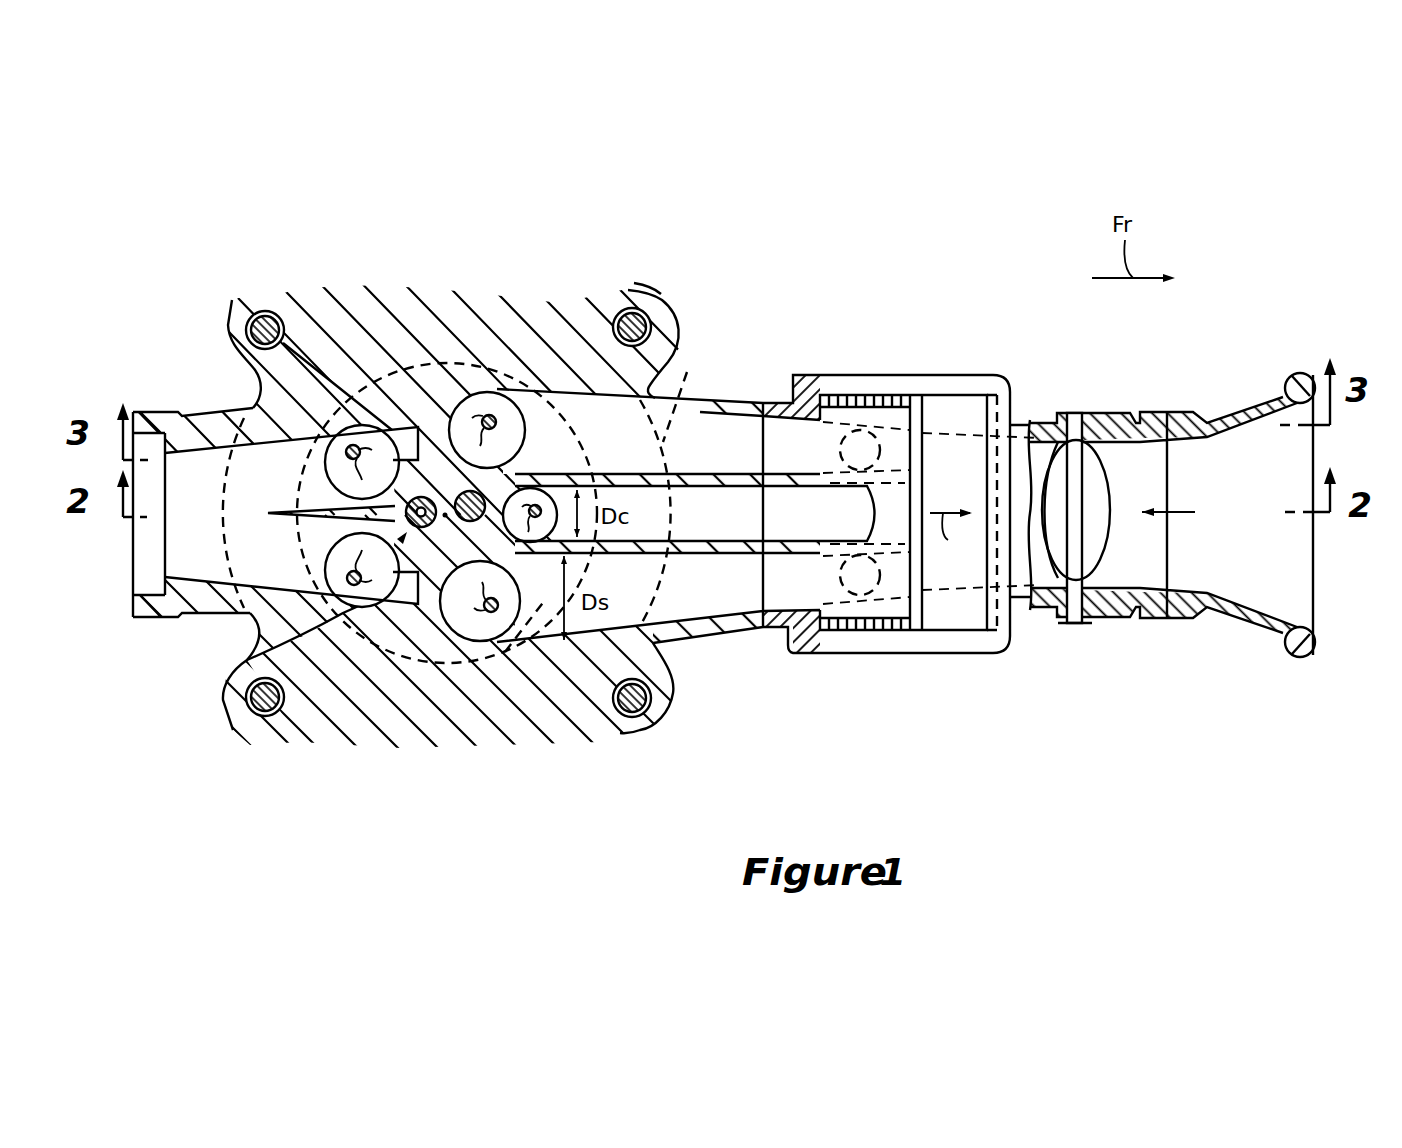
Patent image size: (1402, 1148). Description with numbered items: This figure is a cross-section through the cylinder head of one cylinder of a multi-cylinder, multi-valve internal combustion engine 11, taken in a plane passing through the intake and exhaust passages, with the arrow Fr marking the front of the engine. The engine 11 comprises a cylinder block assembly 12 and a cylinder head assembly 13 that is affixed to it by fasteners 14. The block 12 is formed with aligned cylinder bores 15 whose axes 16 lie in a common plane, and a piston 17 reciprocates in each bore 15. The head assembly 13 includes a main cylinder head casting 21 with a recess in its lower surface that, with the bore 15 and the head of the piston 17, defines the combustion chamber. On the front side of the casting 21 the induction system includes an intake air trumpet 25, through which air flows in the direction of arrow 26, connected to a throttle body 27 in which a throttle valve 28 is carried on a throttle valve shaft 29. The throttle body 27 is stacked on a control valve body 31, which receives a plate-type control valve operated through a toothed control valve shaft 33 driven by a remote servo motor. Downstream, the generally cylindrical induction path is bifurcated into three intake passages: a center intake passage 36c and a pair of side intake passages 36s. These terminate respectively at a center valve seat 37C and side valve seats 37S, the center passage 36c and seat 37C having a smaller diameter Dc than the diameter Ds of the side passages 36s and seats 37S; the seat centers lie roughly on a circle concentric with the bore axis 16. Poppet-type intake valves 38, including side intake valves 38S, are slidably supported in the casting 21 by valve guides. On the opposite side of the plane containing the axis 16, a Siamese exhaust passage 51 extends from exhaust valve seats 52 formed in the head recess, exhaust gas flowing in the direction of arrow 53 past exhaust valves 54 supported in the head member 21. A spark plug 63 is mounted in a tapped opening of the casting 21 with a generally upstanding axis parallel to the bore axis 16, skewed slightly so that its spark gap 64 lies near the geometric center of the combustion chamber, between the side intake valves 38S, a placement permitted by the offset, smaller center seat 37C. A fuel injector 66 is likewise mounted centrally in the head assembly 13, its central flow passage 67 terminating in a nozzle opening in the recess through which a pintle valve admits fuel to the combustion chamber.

The engine 11 is at (782, 231).
The cylinder block assembly 12 is at (700, 398).
The cylinder head assembly 13 is at (680, 333).
The fasteners 14 is at (648, 312).
The cylinder bore 15 is at (248, 430).
The cylinder bore axis 16 is at (445, 515).
The piston 17 is at (483, 392).
The main cylinder head casting 21 is at (523, 303).
The intake air trumpet 25 is at (1247, 633).
The direction of airflow 26 is at (1180, 512).
The throttle body 27 is at (1127, 607).
The throttle valve 28 is at (1087, 480).
The throttle valve shaft 29 is at (1078, 413).
The control valve body 31 is at (818, 376).
The control valve shaft 33 is at (855, 637).
The side intake passages 36s is at (736, 456).
The center intake passage 36c is at (744, 522).
The side valve seats 37S is at (500, 397).
The center valve seat 37C is at (523, 545).
The intake valves 38 is at (553, 468).
The side intake valves 38S is at (505, 652).
The Siamese exhaust passage 51 is at (250, 489).
The exhaust valve seats 52 is at (250, 661).
The exhaust flow direction 53 is at (227, 517).
The exhaust valves 54 is at (291, 578).
The spark plug 63 is at (455, 494).
The spark gap 64 is at (425, 496).
The fuel injector 66 is at (405, 535).
The central flow passage 67 is at (428, 548).